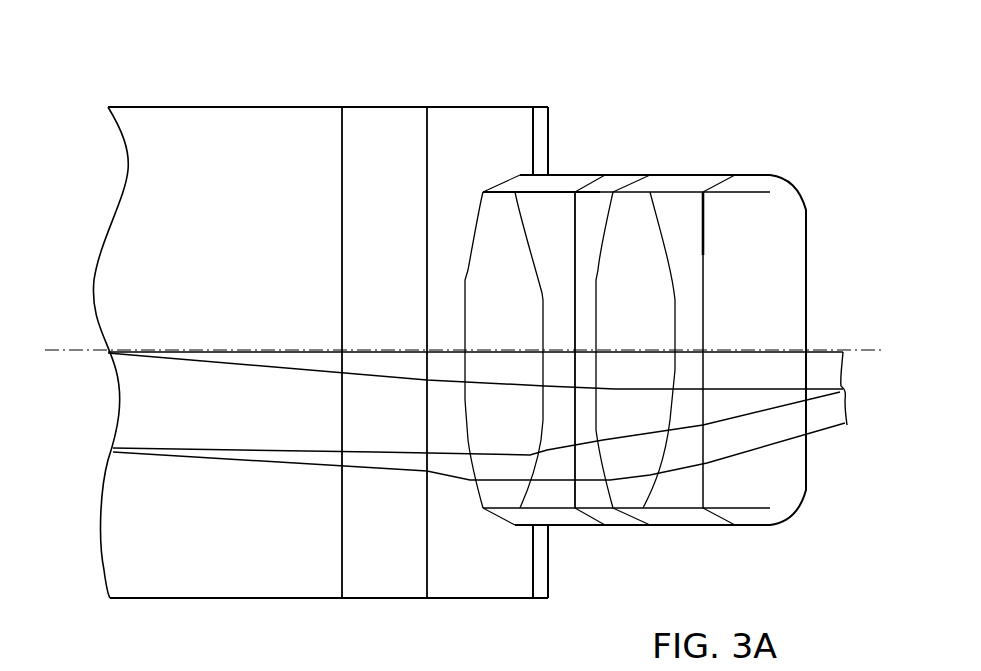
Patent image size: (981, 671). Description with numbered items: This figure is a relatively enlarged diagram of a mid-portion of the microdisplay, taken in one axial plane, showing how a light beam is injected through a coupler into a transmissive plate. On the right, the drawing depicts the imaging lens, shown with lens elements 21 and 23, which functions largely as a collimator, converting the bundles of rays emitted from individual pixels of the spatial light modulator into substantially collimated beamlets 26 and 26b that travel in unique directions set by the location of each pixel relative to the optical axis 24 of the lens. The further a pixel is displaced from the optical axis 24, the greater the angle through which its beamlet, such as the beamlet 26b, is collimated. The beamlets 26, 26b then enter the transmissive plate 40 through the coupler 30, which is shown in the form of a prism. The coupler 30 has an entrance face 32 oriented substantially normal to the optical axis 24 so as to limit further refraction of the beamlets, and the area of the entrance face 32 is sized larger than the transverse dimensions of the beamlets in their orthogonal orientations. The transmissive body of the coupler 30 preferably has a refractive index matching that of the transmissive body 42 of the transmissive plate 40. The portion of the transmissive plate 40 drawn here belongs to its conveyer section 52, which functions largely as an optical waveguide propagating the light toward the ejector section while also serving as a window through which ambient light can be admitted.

The second lens 21 is at (690, 183).
The first lens 23 is at (558, 178).
The optical axis 24 is at (862, 348).
The beamlet 26 is at (440, 338).
The beamlet 26b is at (450, 485).
The coupler 30 is at (386, 98).
The entrance face 32 is at (475, 130).
The transmissive plate 40 is at (156, 100).
The transmissive body 42 is at (132, 212).
The conveyer section 52 is at (100, 670).